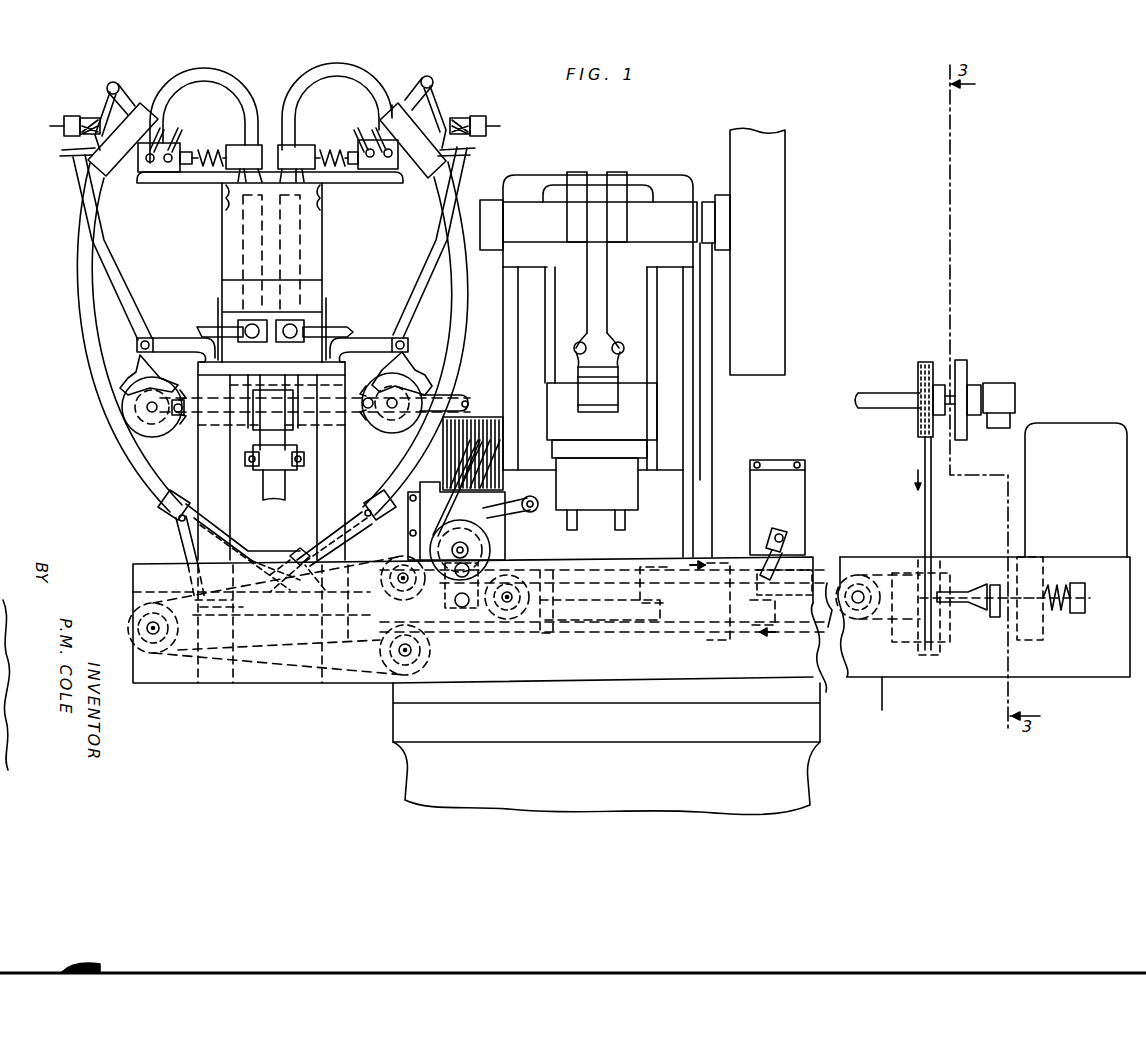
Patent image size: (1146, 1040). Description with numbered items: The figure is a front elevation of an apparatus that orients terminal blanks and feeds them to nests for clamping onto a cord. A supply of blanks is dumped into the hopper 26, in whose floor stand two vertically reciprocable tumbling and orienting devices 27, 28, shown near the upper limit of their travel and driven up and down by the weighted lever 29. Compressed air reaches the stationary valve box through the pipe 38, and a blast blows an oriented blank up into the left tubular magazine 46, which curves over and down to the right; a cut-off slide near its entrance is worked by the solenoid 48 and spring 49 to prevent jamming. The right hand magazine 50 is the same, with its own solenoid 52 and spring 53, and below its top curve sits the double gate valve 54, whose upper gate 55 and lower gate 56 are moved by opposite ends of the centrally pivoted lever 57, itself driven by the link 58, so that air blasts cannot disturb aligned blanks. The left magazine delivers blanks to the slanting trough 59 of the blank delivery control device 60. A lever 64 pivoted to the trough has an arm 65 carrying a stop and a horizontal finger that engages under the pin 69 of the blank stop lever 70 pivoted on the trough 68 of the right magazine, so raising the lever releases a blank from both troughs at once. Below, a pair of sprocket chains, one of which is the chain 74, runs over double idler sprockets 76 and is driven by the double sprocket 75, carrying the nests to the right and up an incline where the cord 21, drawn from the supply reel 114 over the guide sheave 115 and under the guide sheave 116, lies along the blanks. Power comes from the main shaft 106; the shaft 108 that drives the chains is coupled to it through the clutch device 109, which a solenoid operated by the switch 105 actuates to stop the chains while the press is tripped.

The cord 21 is at (442, 523).
The hopper 26 is at (322, 246).
The tumbling and orienting device 27 is at (243, 230).
The tumbling and orienting device 28 is at (302, 258).
The weighted lever 29 is at (266, 497).
The pipe 38 is at (202, 325).
The tubular magazine 46 is at (228, 84).
The solenoid 48 is at (172, 132).
The spring 49 is at (207, 148).
The right hand magazine 50 is at (366, 80).
The solenoid 52 is at (358, 137).
The spring 53 is at (320, 150).
The double gate valve 54 is at (470, 105).
The upper gate 55 is at (404, 98).
The lower gate 56 is at (435, 173).
The centrally pivoted lever 57 is at (440, 103).
The link 58 is at (434, 232).
The trough 59 is at (188, 494).
The blank delivery control device 60 is at (163, 530).
The lever 64 is at (180, 548).
The arm 65 is at (240, 556).
The trough 68 is at (372, 488).
The pin 69 is at (313, 556).
The blank stop lever 70 is at (362, 522).
The sprocket chain 74 is at (290, 643).
The double sprocket 75 is at (978, 633).
The double idler sprocket 76 is at (390, 560).
The switch 105 is at (795, 508).
The main shaft 106 is at (470, 394).
The shaft 108 is at (860, 590).
The clutch device 109 is at (945, 628).
The supply reel 114 is at (470, 418).
The guide sheave 115 is at (468, 442).
The guide sheave 116 is at (500, 528).